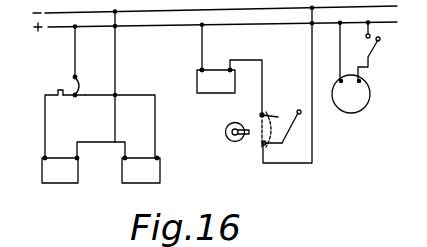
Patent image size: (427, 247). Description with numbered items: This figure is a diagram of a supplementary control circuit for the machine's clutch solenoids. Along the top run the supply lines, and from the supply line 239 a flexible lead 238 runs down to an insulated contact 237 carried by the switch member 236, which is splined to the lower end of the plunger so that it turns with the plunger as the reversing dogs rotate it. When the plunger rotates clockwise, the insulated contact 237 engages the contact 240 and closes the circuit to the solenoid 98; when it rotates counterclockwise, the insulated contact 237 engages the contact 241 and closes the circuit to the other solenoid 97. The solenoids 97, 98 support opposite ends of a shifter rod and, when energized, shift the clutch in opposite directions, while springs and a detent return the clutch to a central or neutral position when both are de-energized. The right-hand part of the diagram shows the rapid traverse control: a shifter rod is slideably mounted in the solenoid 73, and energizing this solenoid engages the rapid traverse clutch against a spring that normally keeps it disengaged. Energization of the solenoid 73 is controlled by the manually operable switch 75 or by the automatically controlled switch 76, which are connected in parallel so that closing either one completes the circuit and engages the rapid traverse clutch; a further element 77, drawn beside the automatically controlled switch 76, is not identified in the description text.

The supply line 239 is at (63, 29).
The flexible lead 238 is at (74, 53).
The switch member 236 is at (83, 82).
The insulated contact 237 is at (71, 100).
The contact 240 is at (86, 95).
The contact 241 is at (63, 91).
The solenoid 97 is at (67, 172).
The solenoid 98 is at (130, 172).
The solenoid 73 is at (213, 82).
The contact 77 is at (265, 129).
The automatically controlled switch 76 is at (250, 144).
The manually operable switch 75 is at (286, 139).